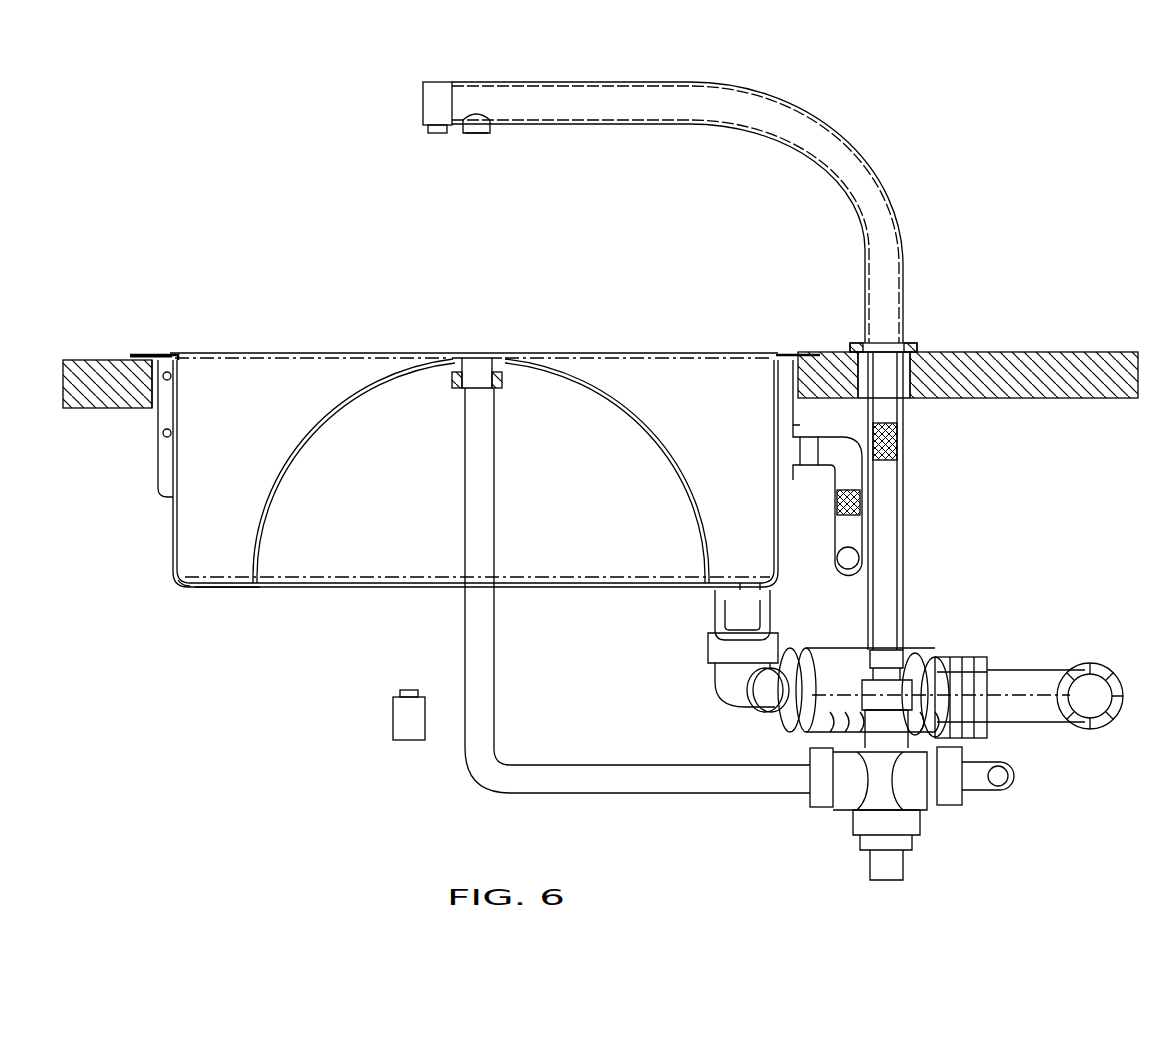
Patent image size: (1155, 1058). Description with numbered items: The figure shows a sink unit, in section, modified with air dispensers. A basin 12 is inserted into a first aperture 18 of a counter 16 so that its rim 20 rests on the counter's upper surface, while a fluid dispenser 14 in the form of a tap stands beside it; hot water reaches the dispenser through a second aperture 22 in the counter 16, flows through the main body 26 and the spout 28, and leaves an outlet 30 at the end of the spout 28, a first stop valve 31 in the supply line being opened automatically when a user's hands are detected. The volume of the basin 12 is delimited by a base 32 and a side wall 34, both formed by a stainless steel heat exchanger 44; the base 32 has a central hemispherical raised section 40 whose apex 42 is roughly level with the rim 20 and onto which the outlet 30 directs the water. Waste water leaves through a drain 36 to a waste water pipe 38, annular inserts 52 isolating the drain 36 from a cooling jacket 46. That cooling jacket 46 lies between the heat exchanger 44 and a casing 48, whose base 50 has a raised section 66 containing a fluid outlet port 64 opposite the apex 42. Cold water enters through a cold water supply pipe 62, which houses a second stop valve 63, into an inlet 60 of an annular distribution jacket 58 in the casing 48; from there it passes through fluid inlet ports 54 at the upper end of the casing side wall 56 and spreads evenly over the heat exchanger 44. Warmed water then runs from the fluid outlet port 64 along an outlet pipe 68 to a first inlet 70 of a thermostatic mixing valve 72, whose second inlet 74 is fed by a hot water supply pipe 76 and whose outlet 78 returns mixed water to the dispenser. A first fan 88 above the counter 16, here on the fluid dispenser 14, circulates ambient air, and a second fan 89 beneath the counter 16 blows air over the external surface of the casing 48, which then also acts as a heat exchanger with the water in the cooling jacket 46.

The basin 12 is at (610, 481).
The fluid dispenser 14 is at (651, 366).
The counter 16 is at (95, 375).
The first aperture 18 is at (152, 408).
The rim 20 is at (140, 355).
The second aperture 22 is at (905, 398).
The main body 26 is at (890, 185).
The spout 28 is at (487, 130).
The outlet 30 is at (470, 134).
The first stop valve 31 is at (900, 445).
The base 32 is at (190, 590).
The side wall 34 is at (322, 372).
The drain 36 is at (742, 583).
The waste water pipe 38 is at (950, 680).
The raised section 40 is at (484, 447).
The apex 42 is at (477, 355).
The heat exchanger 44 is at (653, 430).
The cooling jacket 46 is at (291, 455).
The casing 48 is at (172, 537).
The base of the casing 50 is at (222, 591).
The annular inserts 52 is at (752, 580).
The fluid inlet ports 54 is at (165, 360).
The side wall of the casing 56 is at (176, 428).
The distribution jacket 58 is at (783, 410).
The inlet 60 is at (795, 448).
The cold water supply pipe 62 is at (846, 567).
The second stop valve 63 is at (880, 530).
The fluid outlet port 64 is at (485, 365).
The raised section of the base of the casing 66 is at (352, 395).
The outlet pipe 68 is at (605, 823).
The first inlet 70 is at (820, 778).
The thermostatic mixing valve 72 is at (912, 765).
The second inlet 74 is at (945, 780).
The hot water supply pipe 76 is at (1006, 775).
The outlet 78 is at (893, 730).
The first fan 88 is at (423, 108).
The second fan 89 is at (393, 717).